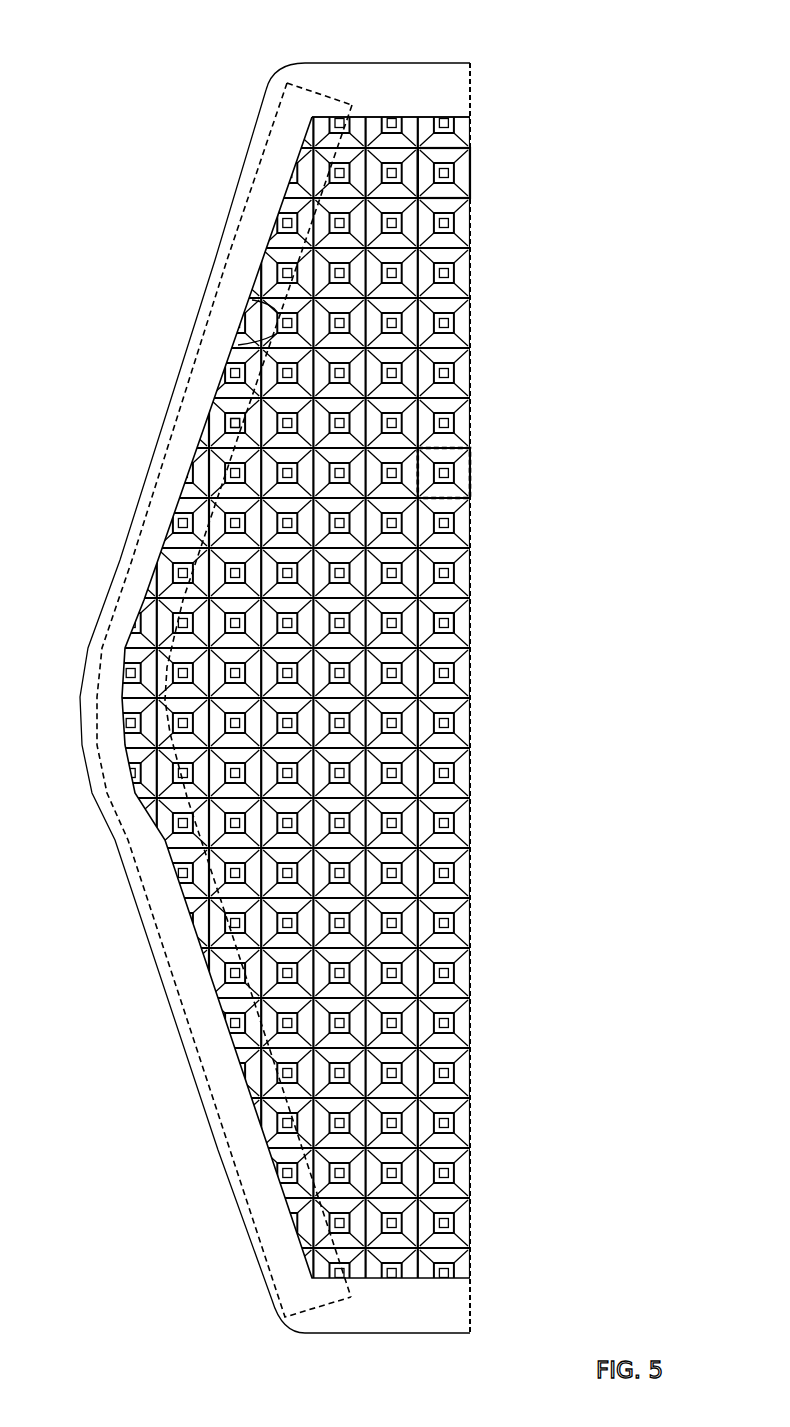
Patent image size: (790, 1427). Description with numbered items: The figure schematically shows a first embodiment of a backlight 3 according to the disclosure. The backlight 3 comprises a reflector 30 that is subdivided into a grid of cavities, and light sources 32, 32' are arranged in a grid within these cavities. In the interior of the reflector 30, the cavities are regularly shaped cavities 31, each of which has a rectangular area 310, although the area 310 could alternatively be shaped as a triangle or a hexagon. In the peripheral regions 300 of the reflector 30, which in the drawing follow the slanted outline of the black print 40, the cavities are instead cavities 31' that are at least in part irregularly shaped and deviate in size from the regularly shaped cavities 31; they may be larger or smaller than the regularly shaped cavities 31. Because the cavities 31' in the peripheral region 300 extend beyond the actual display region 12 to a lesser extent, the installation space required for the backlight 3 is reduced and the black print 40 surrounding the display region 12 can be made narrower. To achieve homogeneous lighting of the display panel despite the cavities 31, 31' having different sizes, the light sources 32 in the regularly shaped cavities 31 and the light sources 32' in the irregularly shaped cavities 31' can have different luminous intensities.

The backlight 3 is at (565, 378).
The display region 12 is at (417, 117).
The reflector 30 is at (458, 343).
The regularly shaped cavities 31 is at (483, 170).
The irregularly shaped cavities 31' is at (191, 311).
The light sources 32 is at (491, 614).
The light sources 32' is at (161, 403).
The peripheral regions 300 is at (320, 93).
The rectangular area 310 is at (468, 462).
The black print 40 is at (255, 110).